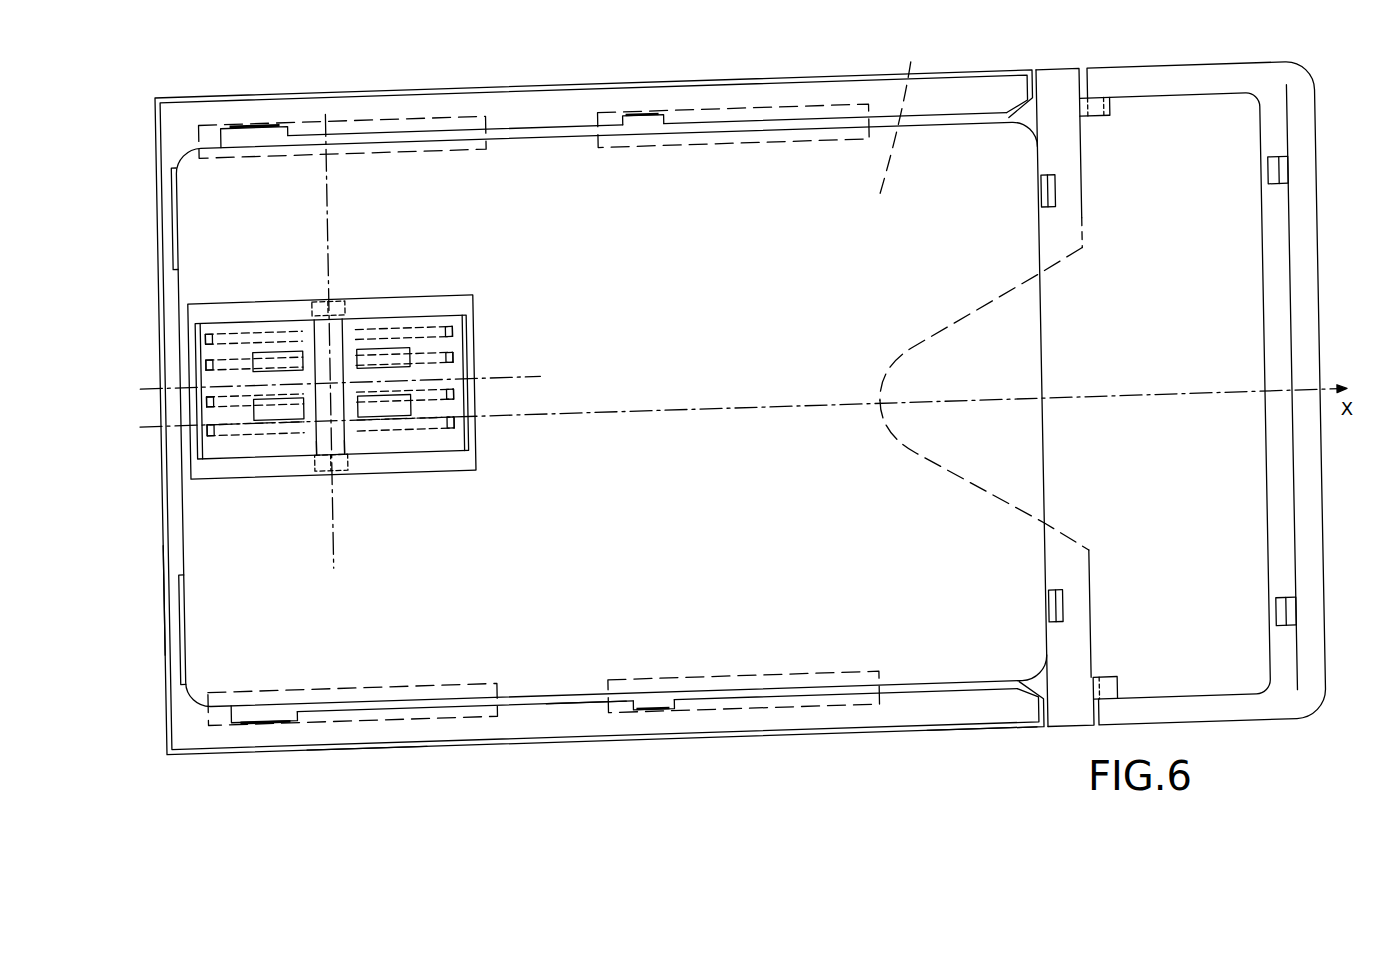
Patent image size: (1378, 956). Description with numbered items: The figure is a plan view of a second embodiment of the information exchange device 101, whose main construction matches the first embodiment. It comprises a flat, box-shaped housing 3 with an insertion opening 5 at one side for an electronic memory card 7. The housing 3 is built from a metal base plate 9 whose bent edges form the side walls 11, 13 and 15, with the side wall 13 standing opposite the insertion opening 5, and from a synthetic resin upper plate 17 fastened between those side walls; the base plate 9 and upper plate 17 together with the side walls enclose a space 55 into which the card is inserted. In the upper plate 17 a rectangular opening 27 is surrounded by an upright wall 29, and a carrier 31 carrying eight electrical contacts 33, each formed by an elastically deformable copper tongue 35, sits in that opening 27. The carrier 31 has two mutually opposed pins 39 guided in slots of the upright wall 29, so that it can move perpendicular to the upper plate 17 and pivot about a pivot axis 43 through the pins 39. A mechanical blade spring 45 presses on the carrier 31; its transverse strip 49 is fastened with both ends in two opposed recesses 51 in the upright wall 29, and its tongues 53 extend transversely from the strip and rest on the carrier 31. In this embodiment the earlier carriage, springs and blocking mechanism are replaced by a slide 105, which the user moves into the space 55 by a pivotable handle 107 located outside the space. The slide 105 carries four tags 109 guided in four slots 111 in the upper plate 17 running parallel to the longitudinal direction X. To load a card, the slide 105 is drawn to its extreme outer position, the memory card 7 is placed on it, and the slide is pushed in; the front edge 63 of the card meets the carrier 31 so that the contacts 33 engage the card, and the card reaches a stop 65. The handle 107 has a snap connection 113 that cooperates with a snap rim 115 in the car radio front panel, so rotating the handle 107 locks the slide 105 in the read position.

The housing 3 is at (958, 70).
The insertion opening 5 is at (1012, 446).
The electronic memory card 7 is at (1022, 352).
The base plate 9 is at (968, 730).
The side wall 11 is at (535, 742).
The side wall 13 is at (162, 567).
The side wall 15 is at (533, 83).
The upper plate 17 is at (574, 717).
The rectangular opening 27 is at (468, 365).
The upright wall 29 is at (452, 303).
The carrier 31 is at (396, 320).
The electrical contacts 33 is at (473, 428).
The copper tongue 35 is at (473, 403).
The pins 39 is at (316, 300).
The pivot axis 43 is at (336, 557).
The blade spring 45 is at (308, 357).
The transverse strip 49 is at (346, 445).
The recesses 51 is at (336, 300).
The tongues 53 is at (468, 347).
The space 55 is at (898, 115).
The front edge 63 is at (182, 508).
The stop 65 is at (172, 222).
The device 101 is at (343, 752).
The slide 105 is at (1073, 608).
The handle 107 is at (1305, 611).
The tags 109 is at (250, 127).
The slots 111 is at (386, 122).
The snap connection 113 is at (1288, 170).
The snap rim 115 is at (1060, 192).